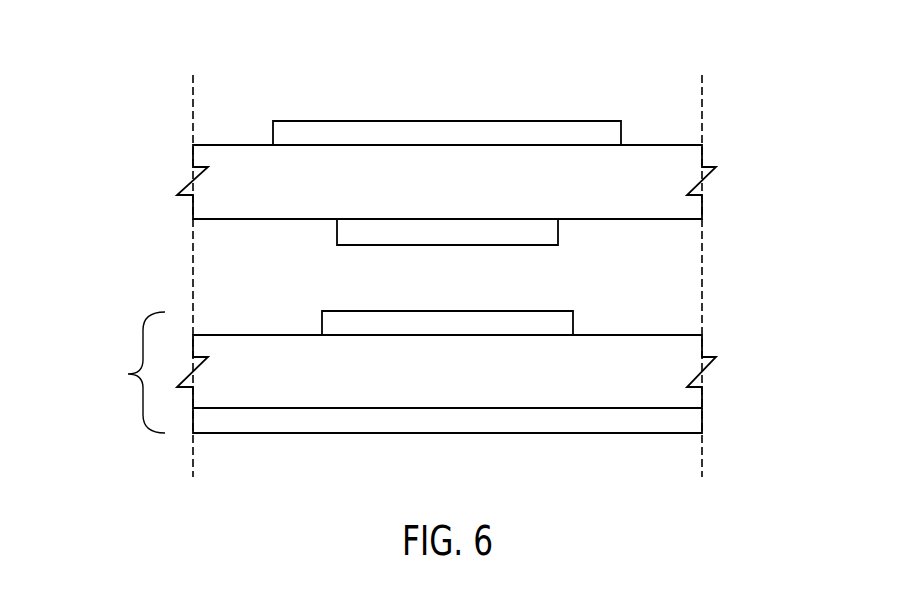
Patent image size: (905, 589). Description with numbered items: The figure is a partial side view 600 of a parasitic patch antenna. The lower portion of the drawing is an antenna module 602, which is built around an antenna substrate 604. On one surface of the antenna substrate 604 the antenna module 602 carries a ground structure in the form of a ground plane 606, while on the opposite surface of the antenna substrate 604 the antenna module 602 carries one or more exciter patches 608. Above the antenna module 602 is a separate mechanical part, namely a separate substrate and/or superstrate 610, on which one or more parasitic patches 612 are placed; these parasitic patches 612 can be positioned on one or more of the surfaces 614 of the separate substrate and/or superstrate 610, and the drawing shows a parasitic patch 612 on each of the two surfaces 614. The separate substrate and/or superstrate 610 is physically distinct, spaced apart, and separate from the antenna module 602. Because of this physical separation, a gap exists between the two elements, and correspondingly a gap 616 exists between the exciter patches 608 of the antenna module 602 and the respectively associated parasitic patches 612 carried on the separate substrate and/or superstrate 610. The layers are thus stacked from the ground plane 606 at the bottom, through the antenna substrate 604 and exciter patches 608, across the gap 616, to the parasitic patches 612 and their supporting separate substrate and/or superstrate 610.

The partial side view 600 is at (116, 44).
The antenna module 602 is at (128, 374).
The antenna substrate 604 is at (678, 366).
The ground plane 606 is at (690, 418).
The exciter patch 608 is at (548, 309).
The separate substrate and/or superstrate 610 is at (678, 176).
The parasitic patch 612 is at (415, 132).
The surface 614 is at (654, 143).
The gap 616 is at (258, 283).